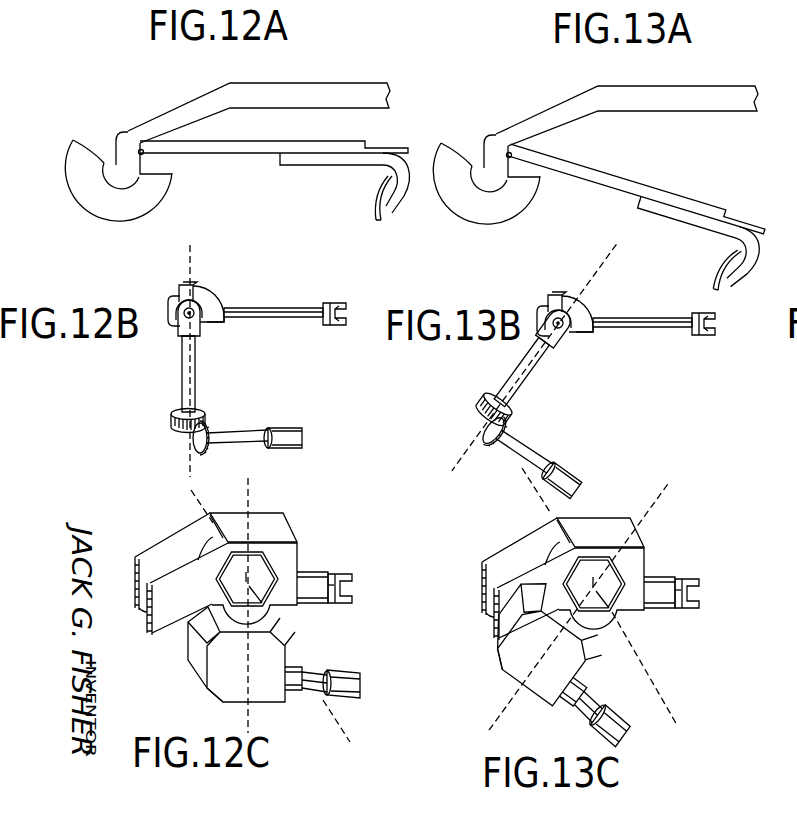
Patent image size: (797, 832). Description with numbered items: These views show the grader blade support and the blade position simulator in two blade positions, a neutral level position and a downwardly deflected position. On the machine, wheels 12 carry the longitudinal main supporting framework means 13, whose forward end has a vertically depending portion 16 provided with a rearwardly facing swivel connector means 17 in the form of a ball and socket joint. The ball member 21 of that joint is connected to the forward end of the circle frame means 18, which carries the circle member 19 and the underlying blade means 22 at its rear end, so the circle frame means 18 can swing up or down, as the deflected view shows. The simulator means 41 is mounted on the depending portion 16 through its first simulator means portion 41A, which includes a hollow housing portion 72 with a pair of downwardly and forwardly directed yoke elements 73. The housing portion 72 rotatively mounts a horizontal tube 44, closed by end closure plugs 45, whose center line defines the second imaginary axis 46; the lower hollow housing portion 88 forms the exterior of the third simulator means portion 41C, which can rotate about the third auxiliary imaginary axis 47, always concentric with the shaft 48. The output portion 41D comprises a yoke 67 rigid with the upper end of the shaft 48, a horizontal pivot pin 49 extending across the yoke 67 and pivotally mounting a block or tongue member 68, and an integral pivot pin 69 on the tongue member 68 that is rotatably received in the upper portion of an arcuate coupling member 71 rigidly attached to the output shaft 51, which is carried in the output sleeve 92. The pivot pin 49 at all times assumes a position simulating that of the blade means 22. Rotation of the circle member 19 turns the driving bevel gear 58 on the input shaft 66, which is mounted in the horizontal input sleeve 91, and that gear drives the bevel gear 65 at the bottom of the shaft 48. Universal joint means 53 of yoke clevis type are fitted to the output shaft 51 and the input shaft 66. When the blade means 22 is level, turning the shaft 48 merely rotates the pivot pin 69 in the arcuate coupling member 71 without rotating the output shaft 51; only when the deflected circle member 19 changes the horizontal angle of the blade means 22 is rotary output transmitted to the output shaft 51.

In FIG. 12A, the wheels 12 is at (144, 208).
In FIG. 13A, the wheels 12 is at (518, 206).
In FIG. 12A, the main supporting framework means 13 is at (283, 59).
In FIG. 13A, the main supporting framework means 13 is at (650, 60).
In FIG. 12A, the depending portion 16 is at (122, 150).
In FIG. 13A, the depending portion 16 is at (492, 147).
In FIG. 12A, the swivel connector means 17 is at (135, 139).
In FIG. 13A, the swivel connector means 17 is at (505, 137).
In FIG. 12A, the circle frame means 18 is at (209, 161).
In FIG. 13A, the circle frame means 18 is at (575, 185).
In FIG. 12A, the circle member 19 is at (301, 168).
In FIG. 13A, the circle member 19 is at (660, 212).
In FIG. 12A, the ball member 21 is at (145, 157).
In FIG. 13A, the ball member 21 is at (515, 152).
In FIG. 12A, the blade means 22 is at (378, 198).
In FIG. 13A, the blade means 22 is at (722, 268).
In FIG. 12C, the simulator means 41 is at (245, 606).
In FIG. 13C, the simulator means 41 is at (573, 607).
In FIG. 12C, the first simulator means portion 41A is at (245, 587).
In FIG. 13C, the first simulator means portion 41A is at (583, 582).
In FIG. 12C, the third simulator means portion 41C is at (241, 669).
In FIG. 13C, the third simulator means portion 41C is at (532, 652).
In FIG. 12B, the output portion of the simulator means 41D is at (191, 305).
In FIG. 13B, the output portion of the simulator means 41D is at (544, 311).
In FIG. 12C, the tube 44 is at (210, 537).
In FIG. 13C, the tube 44 is at (558, 538).
In FIG. 12C, the end closure plugs 45 is at (222, 586).
In FIG. 13C, the end closure plugs 45 is at (575, 590).
In FIG. 12C, the second imaginary axis 46 is at (270, 605).
In FIG. 13C, the second imaginary axis 46 is at (640, 653).
In FIG. 12B, the third auxiliary imaginary axis 47 is at (190, 243).
In FIG. 13B, the third auxiliary imaginary axis 47 is at (597, 274).
In FIG. 12C, the third auxiliary imaginary axis 47 is at (248, 476).
In FIG. 13C, the third auxiliary imaginary axis 47 is at (670, 476).
In FIG. 12B, the shaft 48 is at (196, 376).
In FIG. 13B, the shaft 48 is at (530, 380).
In FIG. 12B, the horizontal pivot pin 49 is at (179, 322).
In FIG. 13B, the horizontal pivot pin 49 is at (563, 333).
In FIG. 12B, the output shaft 51 is at (295, 317).
In FIG. 13B, the output shaft 51 is at (649, 327).
In FIG. 12C, the output shaft 51 is at (333, 599).
In FIG. 13C, the output shaft 51 is at (681, 601).
In FIG. 12B, the universal joint means 53 is at (349, 305).
In FIG. 13B, the universal joint means 53 is at (713, 316).
In FIG. 12C, the universal joint means 53 is at (354, 583).
In FIG. 13C, the universal joint means 53 is at (708, 584).
In FIG. 12B, the bevel gear 58 is at (210, 430).
In FIG. 13B, the bevel gear 58 is at (508, 428).
In FIG. 12B, the bevel gear 65 is at (183, 422).
In FIG. 13B, the bevel gear 65 is at (483, 408).
In FIG. 12B, the input shaft 66 is at (252, 438).
In FIG. 13B, the input shaft 66 is at (514, 457).
In FIG. 12C, the input shaft 66 is at (318, 695).
In FIG. 13C, the input shaft 66 is at (598, 712).
In FIG. 12B, the yoke 67 is at (200, 330).
In FIG. 13B, the yoke 67 is at (538, 334).
In FIG. 12B, the block or tongue member 68 is at (218, 294).
In FIG. 13B, the block or tongue member 68 is at (547, 311).
In FIG. 12B, the pivot pin 69 is at (191, 287).
In FIG. 13B, the pivot pin 69 is at (573, 280).
In FIG. 12B, the arcuate coupling member 71 is at (226, 300).
In FIG. 13B, the arcuate coupling member 71 is at (592, 310).
In FIG. 12C, the hollow housing portion 72 is at (290, 532).
In FIG. 13C, the hollow housing portion 72 is at (636, 533).
In FIG. 12C, the yoke elements 73 is at (163, 622).
In FIG. 13C, the yoke elements 73 is at (503, 623).
In FIG. 12C, the lower hollow housing portion 88 is at (222, 690).
In FIG. 13C, the lower hollow housing portion 88 is at (536, 690).
In FIG. 12C, the input sleeve 91 is at (302, 672).
In FIG. 13C, the input sleeve 91 is at (593, 693).
In FIG. 12C, the output sleeve 92 is at (322, 575).
In FIG. 13C, the output sleeve 92 is at (665, 578).